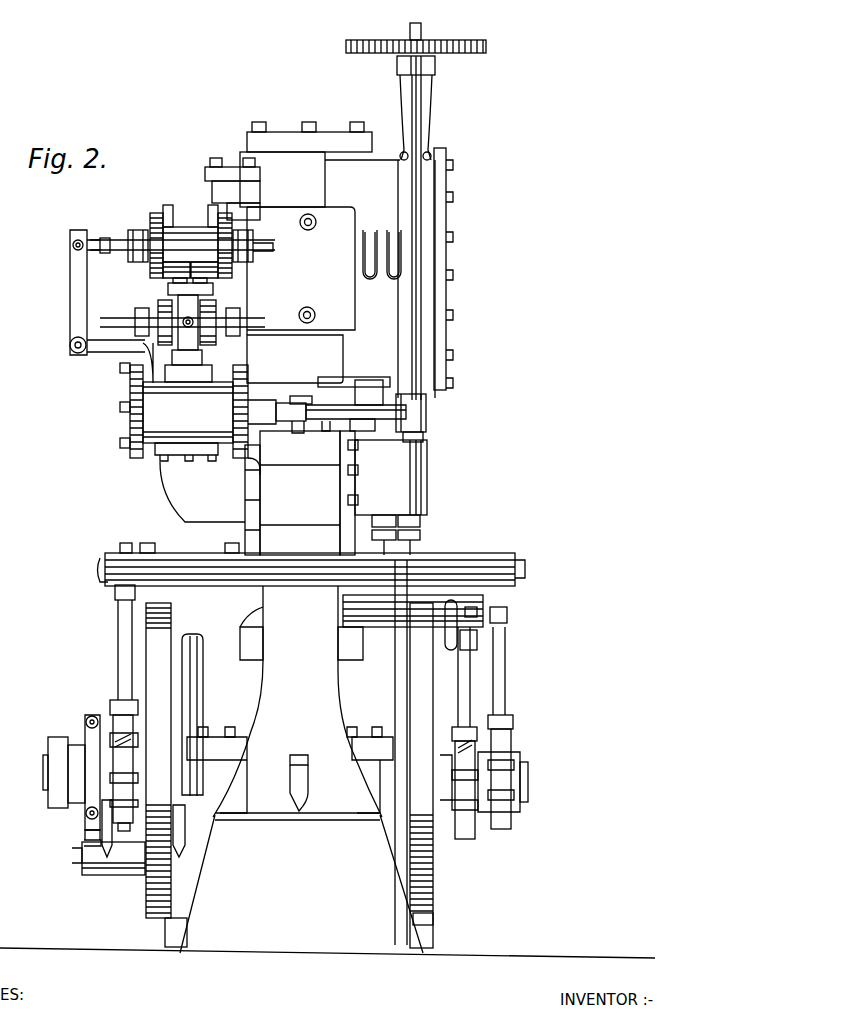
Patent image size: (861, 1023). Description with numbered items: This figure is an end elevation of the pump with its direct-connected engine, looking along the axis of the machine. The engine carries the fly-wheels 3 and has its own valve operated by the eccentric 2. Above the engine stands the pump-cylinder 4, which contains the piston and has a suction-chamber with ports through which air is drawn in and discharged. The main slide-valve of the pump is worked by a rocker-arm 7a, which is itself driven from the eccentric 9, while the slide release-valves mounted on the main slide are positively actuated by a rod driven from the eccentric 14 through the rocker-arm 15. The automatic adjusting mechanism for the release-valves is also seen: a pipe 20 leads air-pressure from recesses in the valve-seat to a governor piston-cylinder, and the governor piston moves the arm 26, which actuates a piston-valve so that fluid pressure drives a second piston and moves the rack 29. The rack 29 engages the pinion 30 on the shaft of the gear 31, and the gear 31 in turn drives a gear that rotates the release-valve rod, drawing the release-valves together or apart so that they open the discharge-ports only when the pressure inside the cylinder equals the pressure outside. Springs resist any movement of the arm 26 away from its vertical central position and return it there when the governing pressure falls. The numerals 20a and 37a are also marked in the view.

The gear 31 is at (486, 48).
The pump-cylinder 4 is at (246, 147).
The pipe 20 is at (217, 211).
The gear 20a is at (165, 207).
The arm 26 is at (88, 290).
The rack 29 is at (346, 392).
The pinion 30 is at (430, 415).
The rocker-arm 15 is at (455, 556).
The rocker-arm 7a is at (408, 612).
The fly-wheels 3 is at (155, 901).
The eccentric 2 is at (85, 722).
The rod 37a is at (113, 710).
The eccentric 9 is at (450, 830).
The eccentric 14 is at (512, 742).